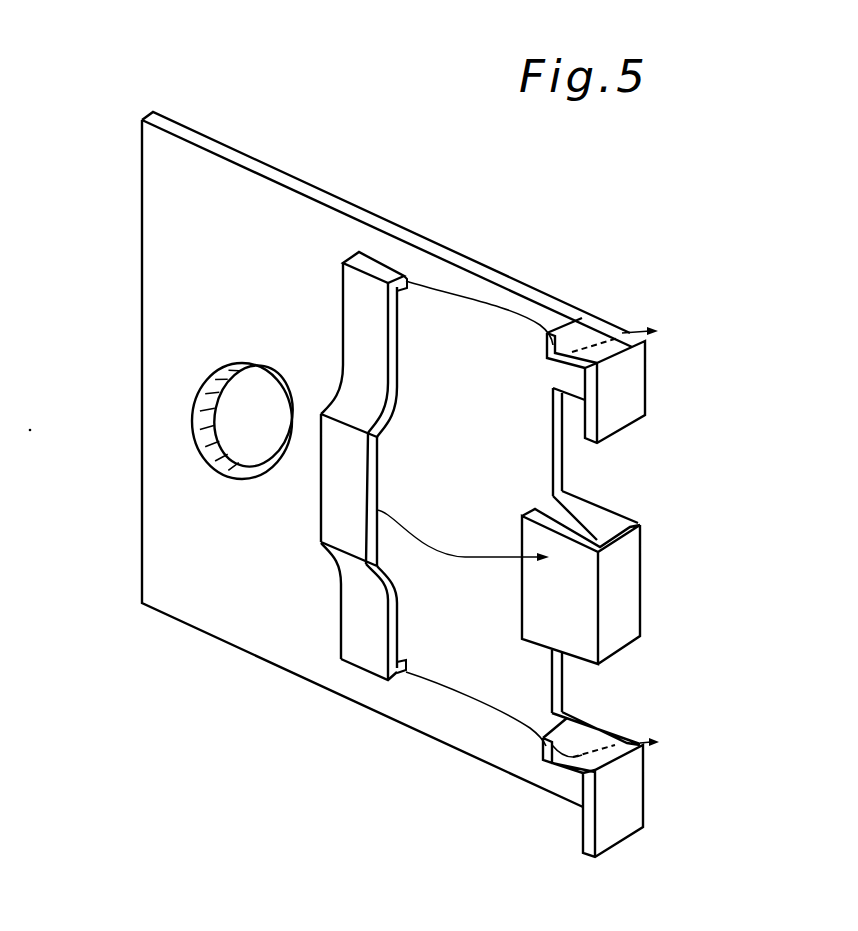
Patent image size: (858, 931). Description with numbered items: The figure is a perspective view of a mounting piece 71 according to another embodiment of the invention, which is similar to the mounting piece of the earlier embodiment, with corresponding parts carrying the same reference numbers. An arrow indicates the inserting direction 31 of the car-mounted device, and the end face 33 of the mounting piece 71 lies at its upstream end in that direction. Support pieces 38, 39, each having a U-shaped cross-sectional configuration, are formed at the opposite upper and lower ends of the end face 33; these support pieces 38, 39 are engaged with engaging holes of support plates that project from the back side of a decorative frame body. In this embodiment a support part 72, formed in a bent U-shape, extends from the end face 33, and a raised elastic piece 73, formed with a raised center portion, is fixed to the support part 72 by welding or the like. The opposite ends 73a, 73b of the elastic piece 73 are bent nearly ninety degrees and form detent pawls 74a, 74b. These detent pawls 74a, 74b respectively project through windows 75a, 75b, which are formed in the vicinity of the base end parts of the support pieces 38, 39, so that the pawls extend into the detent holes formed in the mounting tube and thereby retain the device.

The inserting direction 31 is at (836, 770).
The end face 33 is at (556, 534).
The support piece 38 is at (627, 392).
The support piece 39 is at (620, 802).
The mounting piece 71 is at (279, 648).
The support part 72 is at (628, 596).
The raised elastic piece 73 is at (435, 491).
The end of elastic piece 73a is at (375, 350).
The end of elastic piece 73b is at (393, 660).
The detent pawl 74a is at (404, 289).
The detent pawl 74b is at (400, 673).
The window 75a is at (552, 345).
The window 75b is at (560, 766).